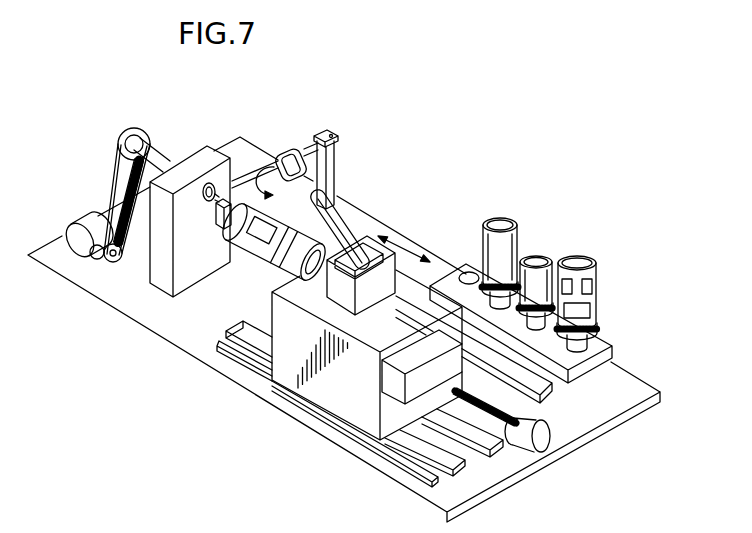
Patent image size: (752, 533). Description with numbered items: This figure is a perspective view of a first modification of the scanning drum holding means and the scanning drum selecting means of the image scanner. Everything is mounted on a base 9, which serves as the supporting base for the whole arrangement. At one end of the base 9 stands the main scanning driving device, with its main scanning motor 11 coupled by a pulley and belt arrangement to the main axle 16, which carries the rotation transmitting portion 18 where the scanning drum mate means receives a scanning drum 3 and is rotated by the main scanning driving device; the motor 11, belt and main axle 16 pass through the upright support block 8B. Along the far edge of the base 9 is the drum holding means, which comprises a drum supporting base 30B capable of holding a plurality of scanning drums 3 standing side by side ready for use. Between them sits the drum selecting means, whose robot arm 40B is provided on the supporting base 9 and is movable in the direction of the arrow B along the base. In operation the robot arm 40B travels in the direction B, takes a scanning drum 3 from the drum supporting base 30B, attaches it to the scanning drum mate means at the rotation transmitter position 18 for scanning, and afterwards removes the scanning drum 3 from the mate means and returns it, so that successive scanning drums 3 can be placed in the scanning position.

The base 9 is at (613, 412).
The support block 8B is at (160, 291).
The rotation transmitting portion 18 is at (197, 218).
The main axle 16 is at (166, 155).
The main scanning motor 11 is at (78, 222).
The robot arm 40B is at (368, 190).
The direction of the arrow B is at (410, 245).
The drum supporting base 30B is at (604, 346).
The scanning drum 3 is at (258, 254).